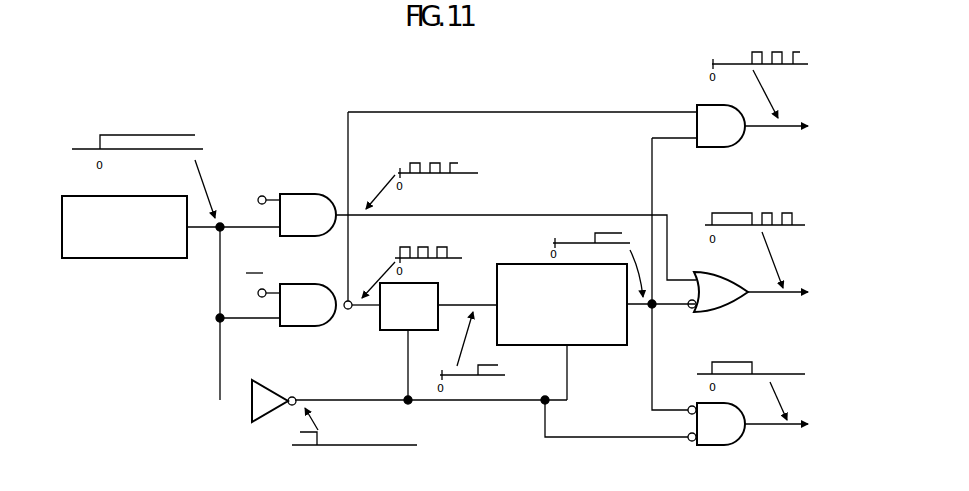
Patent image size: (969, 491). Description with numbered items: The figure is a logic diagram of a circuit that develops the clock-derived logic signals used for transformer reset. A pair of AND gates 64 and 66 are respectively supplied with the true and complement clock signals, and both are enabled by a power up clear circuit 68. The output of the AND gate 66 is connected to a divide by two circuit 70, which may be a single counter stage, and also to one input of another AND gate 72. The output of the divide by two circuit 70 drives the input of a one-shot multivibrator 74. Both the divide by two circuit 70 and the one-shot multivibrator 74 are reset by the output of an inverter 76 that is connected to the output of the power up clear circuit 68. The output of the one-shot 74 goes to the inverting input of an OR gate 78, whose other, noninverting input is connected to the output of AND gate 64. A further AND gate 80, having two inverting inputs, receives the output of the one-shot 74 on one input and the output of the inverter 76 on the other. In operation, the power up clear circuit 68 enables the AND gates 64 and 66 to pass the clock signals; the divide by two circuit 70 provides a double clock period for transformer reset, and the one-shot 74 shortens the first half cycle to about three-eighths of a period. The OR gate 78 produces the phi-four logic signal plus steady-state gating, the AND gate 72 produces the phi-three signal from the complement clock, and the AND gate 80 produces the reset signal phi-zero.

The AND gate 64 is at (322, 194).
The AND gate 66 is at (322, 284).
The power up clear circuit 68 is at (157, 194).
The divide by two circuit 70 is at (438, 296).
The AND gate 72 is at (705, 105).
The one-shot multivibrator 74 is at (517, 263).
The inverter 76 is at (280, 390).
The OR gate 78 is at (708, 272).
The AND gate 80 is at (699, 403).